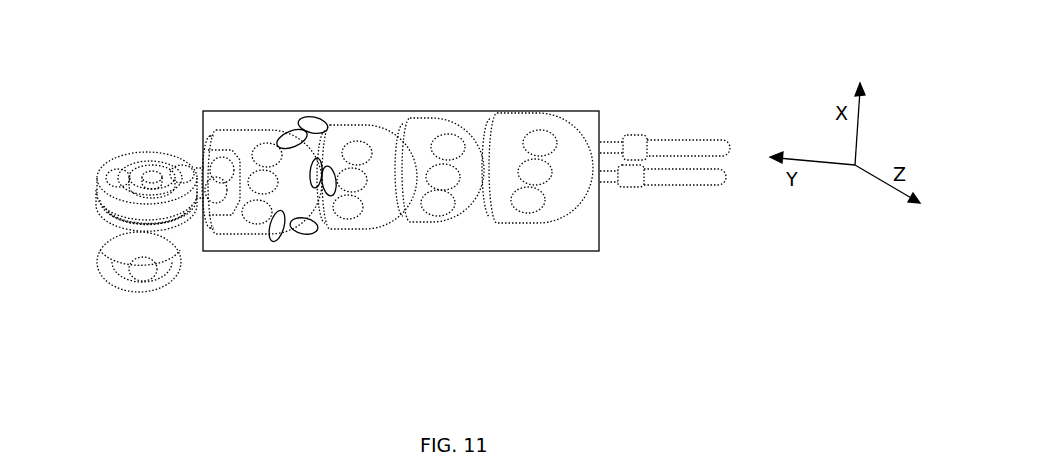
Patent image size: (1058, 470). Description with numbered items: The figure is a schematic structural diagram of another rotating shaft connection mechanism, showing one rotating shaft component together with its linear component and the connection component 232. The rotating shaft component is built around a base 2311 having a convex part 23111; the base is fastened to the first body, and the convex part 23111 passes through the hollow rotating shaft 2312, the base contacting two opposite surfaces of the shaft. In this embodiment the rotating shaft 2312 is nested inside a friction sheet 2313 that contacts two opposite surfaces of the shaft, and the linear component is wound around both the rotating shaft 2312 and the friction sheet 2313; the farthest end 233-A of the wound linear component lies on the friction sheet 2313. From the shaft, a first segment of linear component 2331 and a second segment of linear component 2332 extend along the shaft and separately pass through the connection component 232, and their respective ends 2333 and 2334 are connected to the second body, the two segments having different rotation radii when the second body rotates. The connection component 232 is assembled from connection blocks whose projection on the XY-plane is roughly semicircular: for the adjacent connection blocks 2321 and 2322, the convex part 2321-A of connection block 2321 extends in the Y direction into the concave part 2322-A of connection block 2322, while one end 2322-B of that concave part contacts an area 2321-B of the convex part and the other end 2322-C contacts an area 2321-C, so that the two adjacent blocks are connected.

The connection component 232 is at (442, 107).
The base 2311 is at (132, 242).
The rotating shaft 2312 is at (143, 170).
The convex part 23111 is at (155, 172).
The friction sheet 2313 is at (117, 162).
The farthest end of the linear component 233-A is at (113, 197).
The connection block 2321 is at (237, 137).
The convex part of the connection block 2321-A is at (317, 187).
The contact area of the convex part 2321-B is at (293, 130).
The contact area of the convex part 2321-C is at (273, 238).
The connection block 2322 is at (350, 133).
The concave part of the connection block 2322-A is at (327, 193).
The end of the concave part 2322-B is at (315, 118).
The other end of the concave part 2322-C is at (300, 235).
The first segment of linear component 2331 is at (603, 146).
The second segment of linear component 2332 is at (603, 185).
The end of the first segment of linear component 2333 is at (687, 138).
The end of the second segment of linear component 2334 is at (687, 180).